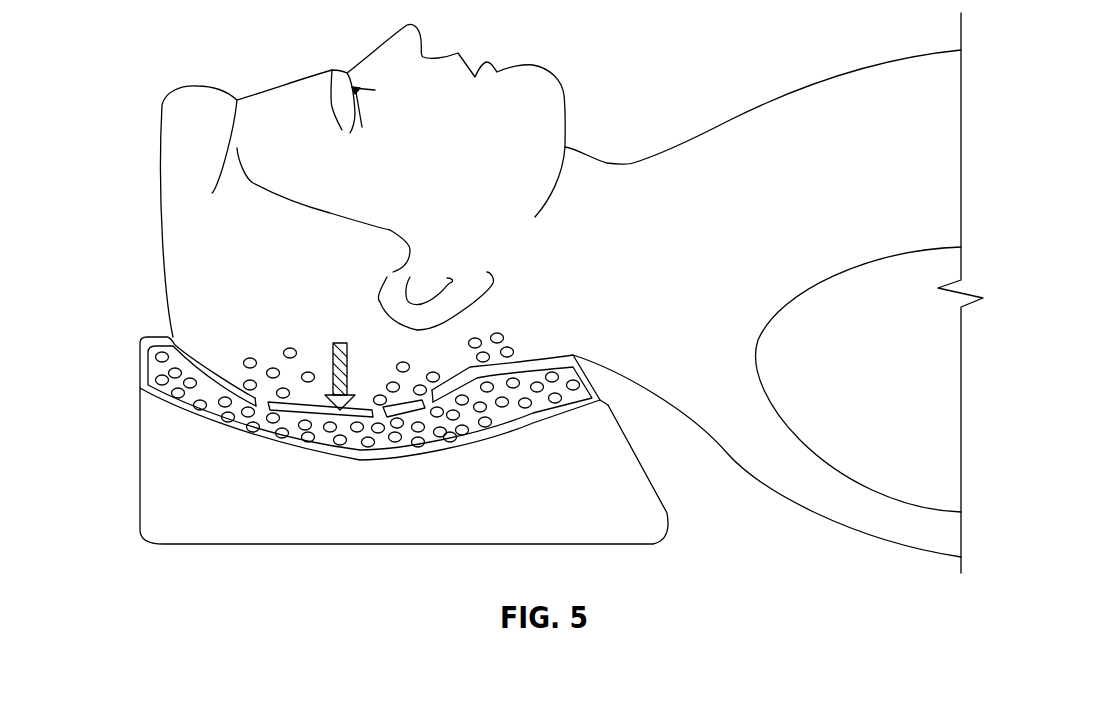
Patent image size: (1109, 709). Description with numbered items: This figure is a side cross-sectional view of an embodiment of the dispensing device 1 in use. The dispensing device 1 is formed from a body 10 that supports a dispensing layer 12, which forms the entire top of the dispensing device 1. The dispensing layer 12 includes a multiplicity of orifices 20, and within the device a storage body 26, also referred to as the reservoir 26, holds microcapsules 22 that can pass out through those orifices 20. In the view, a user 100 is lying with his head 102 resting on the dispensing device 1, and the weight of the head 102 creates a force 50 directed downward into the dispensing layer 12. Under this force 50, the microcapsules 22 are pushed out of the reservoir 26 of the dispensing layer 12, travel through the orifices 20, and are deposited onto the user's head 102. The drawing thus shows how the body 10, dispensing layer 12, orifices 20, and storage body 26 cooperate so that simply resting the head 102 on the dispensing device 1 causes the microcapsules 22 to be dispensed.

The dispensing device 1 is at (396, 425).
The body 10 is at (372, 517).
The dispensing layer 12 is at (140, 353).
The orifices 20 is at (430, 397).
The microcapsules 22 is at (250, 358).
The storage body 26 is at (603, 397).
The force 50 is at (340, 342).
The user 100 is at (813, 213).
The head 102 is at (225, 243).